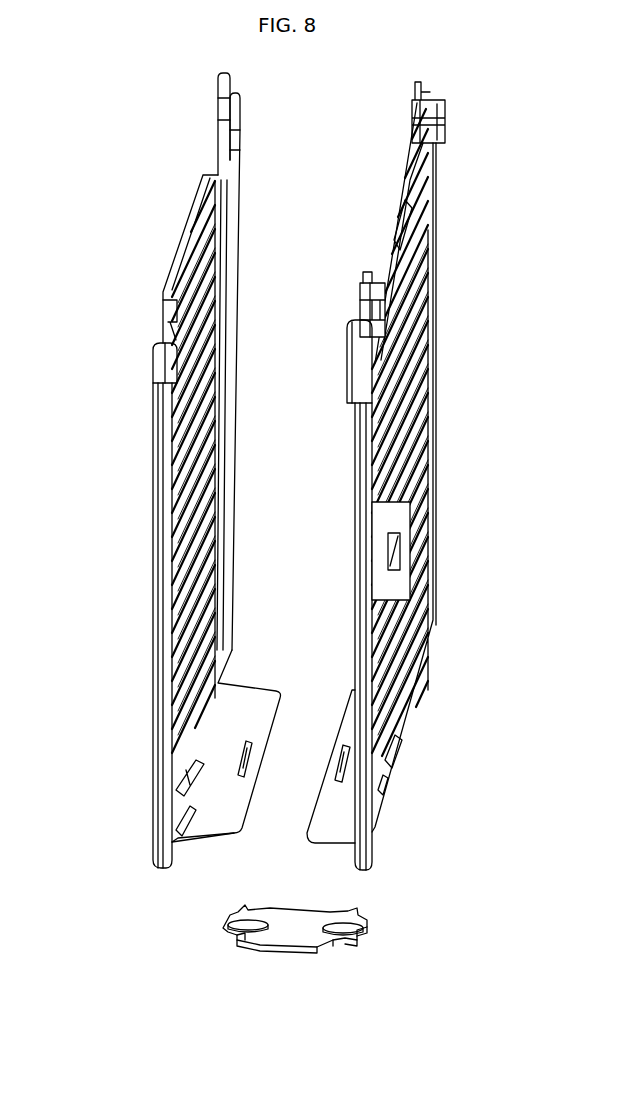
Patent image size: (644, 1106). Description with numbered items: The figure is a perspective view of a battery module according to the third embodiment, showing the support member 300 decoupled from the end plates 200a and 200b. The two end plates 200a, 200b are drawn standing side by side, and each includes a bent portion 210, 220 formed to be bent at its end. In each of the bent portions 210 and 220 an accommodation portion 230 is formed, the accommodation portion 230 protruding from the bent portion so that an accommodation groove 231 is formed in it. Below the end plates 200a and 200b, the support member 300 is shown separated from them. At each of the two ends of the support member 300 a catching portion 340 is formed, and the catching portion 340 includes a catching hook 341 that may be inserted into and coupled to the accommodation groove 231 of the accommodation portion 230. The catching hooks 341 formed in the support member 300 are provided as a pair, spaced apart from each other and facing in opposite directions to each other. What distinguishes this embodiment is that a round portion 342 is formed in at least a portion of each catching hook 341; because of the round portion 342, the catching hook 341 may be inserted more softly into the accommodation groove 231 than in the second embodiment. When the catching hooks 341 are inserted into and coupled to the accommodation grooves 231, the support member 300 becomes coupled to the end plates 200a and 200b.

The end plate 200a is at (182, 482).
The end plate 200b is at (426, 488).
The bent portion 210 is at (215, 834).
The bent portion 220 is at (340, 842).
The accommodation portion 230 is at (246, 746).
The accommodation groove 231 is at (253, 758).
The support member 300 is at (255, 973).
The catching portion 340 is at (255, 957).
The catching hook 341 is at (237, 943).
The round portion 342 is at (229, 922).